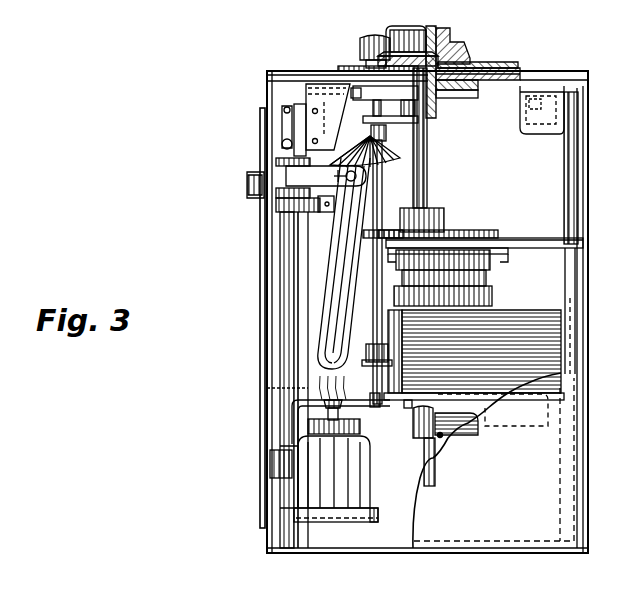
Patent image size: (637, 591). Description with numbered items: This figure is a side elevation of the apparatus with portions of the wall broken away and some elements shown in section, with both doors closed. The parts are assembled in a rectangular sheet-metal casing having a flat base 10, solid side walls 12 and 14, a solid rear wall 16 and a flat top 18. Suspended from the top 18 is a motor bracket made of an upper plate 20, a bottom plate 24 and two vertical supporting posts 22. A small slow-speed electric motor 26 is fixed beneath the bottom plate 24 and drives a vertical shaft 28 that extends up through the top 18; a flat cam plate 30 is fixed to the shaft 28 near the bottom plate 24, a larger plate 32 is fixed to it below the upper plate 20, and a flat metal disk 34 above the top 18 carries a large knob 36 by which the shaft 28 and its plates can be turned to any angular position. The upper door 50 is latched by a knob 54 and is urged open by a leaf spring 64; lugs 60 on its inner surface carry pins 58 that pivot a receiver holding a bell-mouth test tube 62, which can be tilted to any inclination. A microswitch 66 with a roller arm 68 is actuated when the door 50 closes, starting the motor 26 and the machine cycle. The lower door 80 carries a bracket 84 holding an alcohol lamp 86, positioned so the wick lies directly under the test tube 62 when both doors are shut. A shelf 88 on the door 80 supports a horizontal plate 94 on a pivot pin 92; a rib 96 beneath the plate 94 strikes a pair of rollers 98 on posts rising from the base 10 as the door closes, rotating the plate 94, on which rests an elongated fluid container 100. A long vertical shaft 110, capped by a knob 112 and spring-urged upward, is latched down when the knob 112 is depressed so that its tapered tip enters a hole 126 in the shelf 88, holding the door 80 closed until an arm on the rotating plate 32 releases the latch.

The base 10 is at (320, 540).
The side wall 12 is at (400, 532).
The side wall 14 is at (530, 534).
The rear wall 16 is at (580, 301).
The top 18 is at (546, 76).
The upper plate 20 is at (478, 74).
The vertical supporting posts 22 is at (560, 163).
The bottom plate 24 is at (520, 236).
The electric motor 26 is at (484, 287).
The vertical shaft 28 is at (420, 151).
The cam plate 30 is at (450, 224).
The plate 32 is at (450, 92).
The flat metal disk 34 is at (482, 56).
The knob 36 is at (404, 24).
The upper door 50 is at (272, 229).
The knob 54 is at (242, 176).
The pins 58 is at (321, 178).
The lugs 60 is at (320, 148).
The test tube 62 is at (324, 259).
The leaf spring 64 is at (316, 200).
The microswitch 66 is at (320, 124).
The roller arm 68 is at (276, 120).
The lower door 80 is at (260, 459).
The bracket 84 is at (350, 512).
The alcohol lamp 86 is at (356, 468).
The shelf 88 is at (302, 392).
The pivot pin 92 is at (410, 422).
The horizontal plate 94 is at (478, 390).
The rib 96 is at (448, 420).
The rollers 98 is at (418, 436).
The fluid container 100 is at (506, 312).
The vertical shaft 110 is at (378, 182).
The knob 112 is at (352, 36).
The hole 126 is at (400, 398).